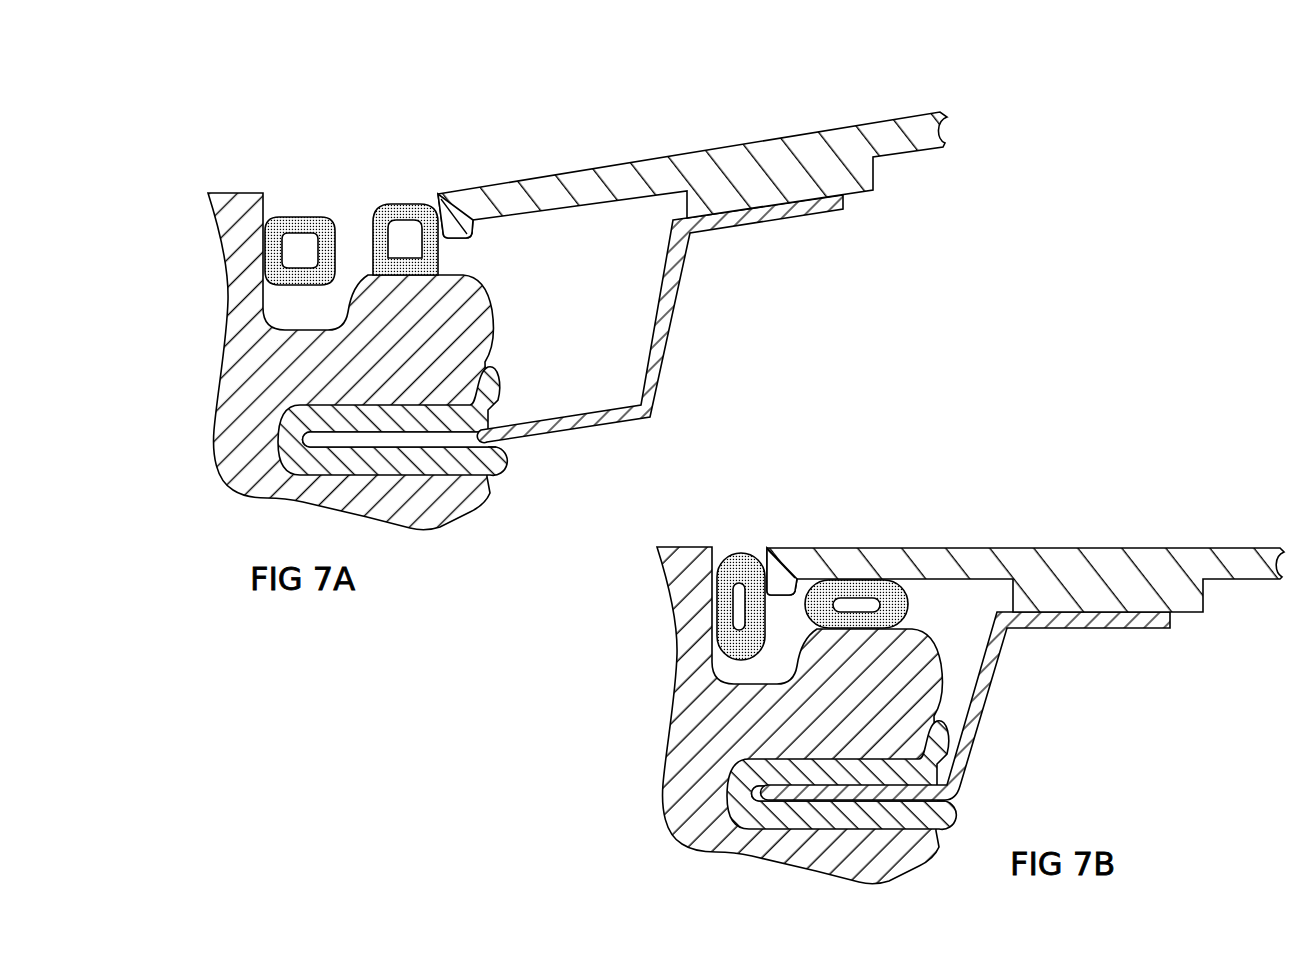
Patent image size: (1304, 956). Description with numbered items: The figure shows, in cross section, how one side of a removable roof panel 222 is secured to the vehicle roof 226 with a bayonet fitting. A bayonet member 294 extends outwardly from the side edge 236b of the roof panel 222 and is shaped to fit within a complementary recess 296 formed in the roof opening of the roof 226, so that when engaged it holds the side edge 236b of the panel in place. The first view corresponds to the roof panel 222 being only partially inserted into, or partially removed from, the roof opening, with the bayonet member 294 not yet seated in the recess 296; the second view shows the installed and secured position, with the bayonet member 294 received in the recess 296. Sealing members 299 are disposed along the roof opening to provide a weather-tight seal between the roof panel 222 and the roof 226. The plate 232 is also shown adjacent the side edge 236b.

In FIG. 7A, the roof panel 222 is at (656, 110).
In FIG. 7B, the roof panel 222 is at (1029, 485).
In FIG. 7A, the roof 226 is at (228, 372).
In FIG. 7B, the roof 226 is at (678, 732).
In FIG. 7A, the cover plate 232 is at (869, 113).
In FIG. 7B, the cover plate 232 is at (1187, 538).
In FIG. 7A, the side edge 236b is at (438, 196).
In FIG. 7B, the side edge 236b is at (765, 562).
In FIG. 7A, the bayonet member 294 is at (663, 340).
In FIG. 7B, the bayonet member 294 is at (975, 708).
In FIG. 7A, the recess 296 is at (433, 438).
In FIG. 7B, the recess 296 is at (760, 795).
In FIG. 7A, the sealing member 299 is at (375, 210).
In FIG. 7B, the sealing member 299 is at (825, 588).